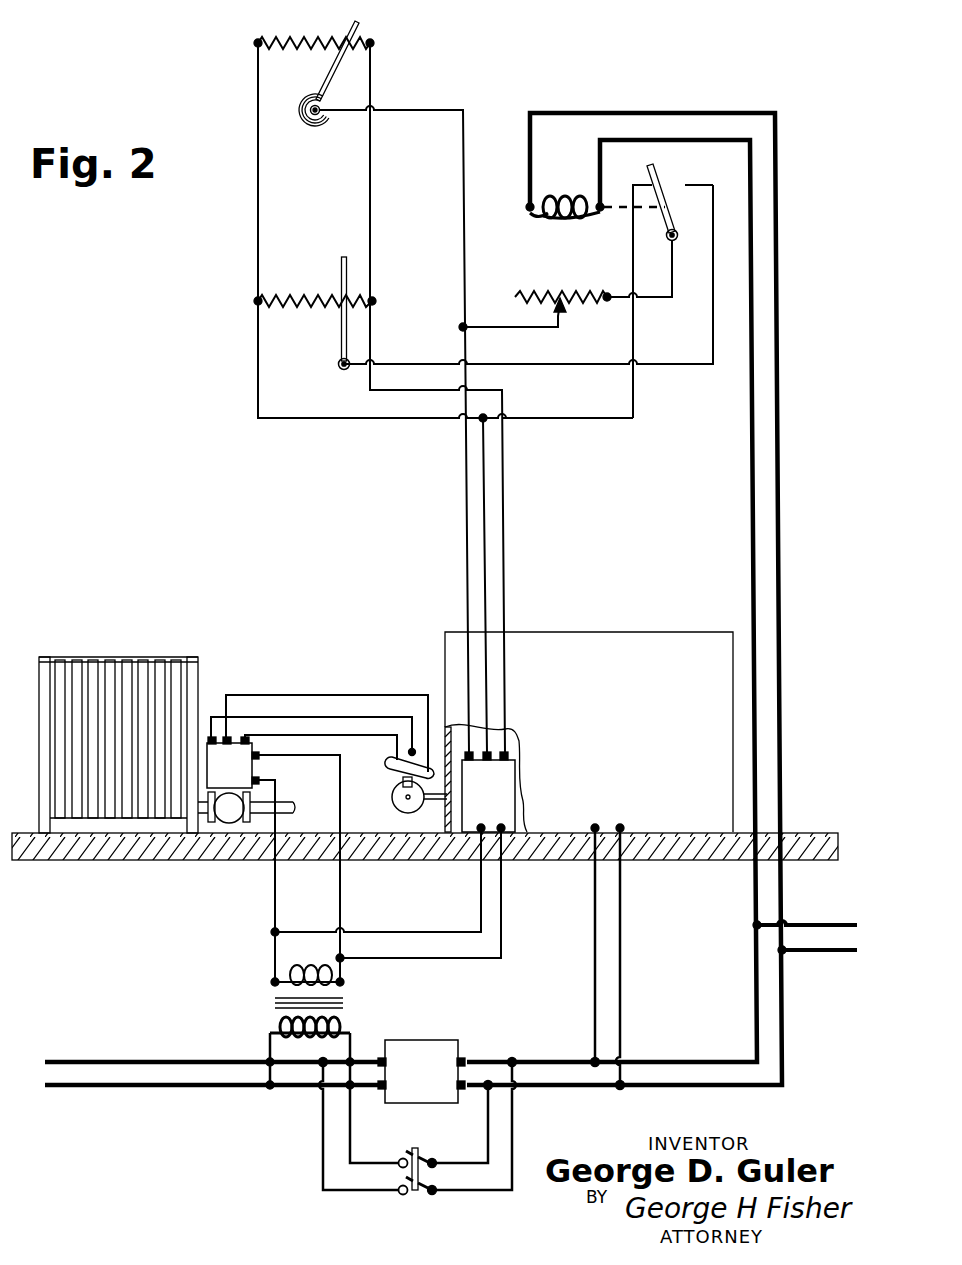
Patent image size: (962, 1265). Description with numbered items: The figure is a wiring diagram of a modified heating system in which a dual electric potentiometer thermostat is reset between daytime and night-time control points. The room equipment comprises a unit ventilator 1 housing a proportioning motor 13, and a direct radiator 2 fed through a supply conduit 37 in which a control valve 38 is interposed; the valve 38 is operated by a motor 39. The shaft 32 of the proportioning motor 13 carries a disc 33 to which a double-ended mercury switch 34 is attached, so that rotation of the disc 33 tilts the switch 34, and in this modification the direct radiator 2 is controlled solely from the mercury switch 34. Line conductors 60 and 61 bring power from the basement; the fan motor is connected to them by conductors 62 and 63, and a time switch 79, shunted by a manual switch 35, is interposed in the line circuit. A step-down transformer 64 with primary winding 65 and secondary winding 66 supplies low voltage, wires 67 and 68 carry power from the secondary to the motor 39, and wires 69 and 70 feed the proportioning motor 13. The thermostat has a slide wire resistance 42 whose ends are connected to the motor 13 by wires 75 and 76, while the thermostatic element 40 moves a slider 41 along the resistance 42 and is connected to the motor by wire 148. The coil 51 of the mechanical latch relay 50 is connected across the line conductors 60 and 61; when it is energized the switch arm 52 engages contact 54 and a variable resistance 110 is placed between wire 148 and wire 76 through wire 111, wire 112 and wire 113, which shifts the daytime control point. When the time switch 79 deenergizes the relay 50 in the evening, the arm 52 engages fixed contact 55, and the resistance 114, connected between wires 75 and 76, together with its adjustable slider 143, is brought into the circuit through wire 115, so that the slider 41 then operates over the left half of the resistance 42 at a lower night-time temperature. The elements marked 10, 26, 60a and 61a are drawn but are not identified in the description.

The unit ventilator 1 is at (590, 632).
The direct radiator 2 is at (107, 657).
The conductor to thermostat 10 is at (358, 694).
The proportioning motor 13 is at (488, 792).
The conductor 26 is at (338, 755).
The shaft 32 is at (420, 808).
The disc 33 is at (394, 809).
The double-ended mercury switch 34 is at (393, 770).
The manual switch 35 is at (415, 1201).
The supply conduit 37 is at (292, 806).
The control valve 38 is at (224, 807).
The motor 39 is at (233, 762).
The thermostatic element 40 is at (321, 133).
The slider 41 is at (334, 71).
The slide wire resistance 42 is at (328, 35).
The mechanical latch relay 50 is at (572, 228).
The coil 51 is at (573, 193).
The switch arm 52 is at (667, 216).
The contact 54 is at (652, 185).
The fixed contact 55 is at (687, 182).
The line conductor 60 is at (752, 587).
The supply line branch 60a is at (822, 922).
The line conductor 61 is at (783, 610).
The supply line branch 61a is at (801, 957).
The conductor 62 is at (594, 919).
The conductor 63 is at (625, 927).
The step-down transformer 64 is at (260, 1005).
The primary winding 65 is at (350, 1022).
The secondary winding 66 is at (307, 974).
The wire 67 is at (275, 888).
The wire 68 is at (342, 902).
The wire 69 is at (435, 959).
The wire 70 is at (419, 932).
The wire 75 is at (372, 220).
The wire 76 is at (258, 228).
The time switch 79 is at (420, 1104).
The variable resistance 110 is at (550, 293).
The wire 111 is at (509, 326).
The wire 112 is at (650, 296).
The wire 113 is at (590, 418).
The resistance 114 is at (319, 295).
The wire 115 is at (680, 362).
The adjustable slider 143 is at (341, 336).
The wire 148 is at (428, 110).